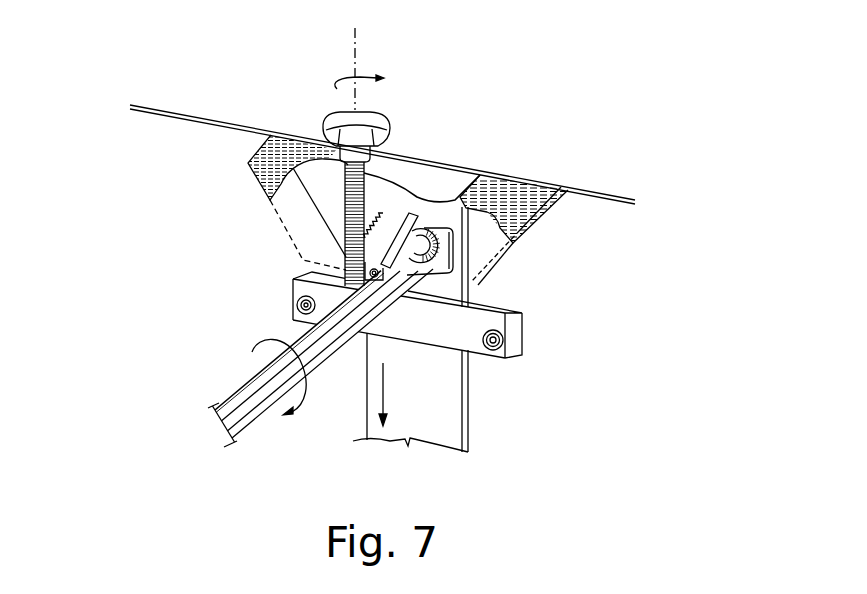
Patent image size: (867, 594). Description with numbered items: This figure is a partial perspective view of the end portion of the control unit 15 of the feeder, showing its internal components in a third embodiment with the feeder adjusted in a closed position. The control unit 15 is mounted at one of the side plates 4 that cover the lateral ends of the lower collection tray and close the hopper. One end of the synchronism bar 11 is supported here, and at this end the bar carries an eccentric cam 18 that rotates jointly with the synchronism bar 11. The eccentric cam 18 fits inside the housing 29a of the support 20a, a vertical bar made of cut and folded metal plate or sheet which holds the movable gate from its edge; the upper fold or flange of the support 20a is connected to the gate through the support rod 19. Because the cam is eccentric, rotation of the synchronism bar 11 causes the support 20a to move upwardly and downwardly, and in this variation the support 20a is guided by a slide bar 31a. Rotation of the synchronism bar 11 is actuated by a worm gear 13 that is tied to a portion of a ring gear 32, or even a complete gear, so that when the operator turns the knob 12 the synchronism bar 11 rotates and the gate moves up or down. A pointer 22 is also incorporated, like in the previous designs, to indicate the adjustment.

The side plate 4 is at (591, 236).
The synchronism bar 11 is at (233, 374).
The knob 12 is at (380, 112).
The worm gear 13 is at (346, 232).
The control unit 15 is at (286, 124).
The eccentric cam 18 is at (455, 243).
The support rod 19 is at (239, 472).
The support 20a is at (442, 410).
The pointer 22 is at (408, 276).
The housing 29a is at (458, 248).
The slide bar 31a is at (478, 347).
The ring gear 32 is at (390, 227).